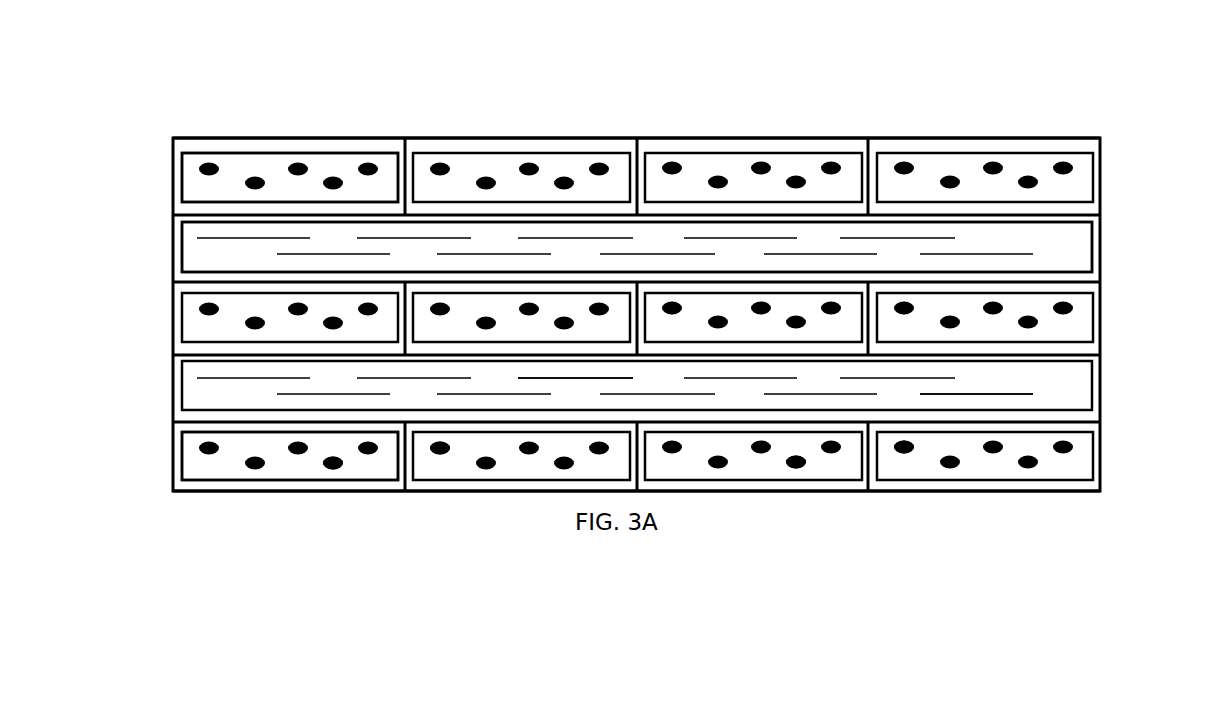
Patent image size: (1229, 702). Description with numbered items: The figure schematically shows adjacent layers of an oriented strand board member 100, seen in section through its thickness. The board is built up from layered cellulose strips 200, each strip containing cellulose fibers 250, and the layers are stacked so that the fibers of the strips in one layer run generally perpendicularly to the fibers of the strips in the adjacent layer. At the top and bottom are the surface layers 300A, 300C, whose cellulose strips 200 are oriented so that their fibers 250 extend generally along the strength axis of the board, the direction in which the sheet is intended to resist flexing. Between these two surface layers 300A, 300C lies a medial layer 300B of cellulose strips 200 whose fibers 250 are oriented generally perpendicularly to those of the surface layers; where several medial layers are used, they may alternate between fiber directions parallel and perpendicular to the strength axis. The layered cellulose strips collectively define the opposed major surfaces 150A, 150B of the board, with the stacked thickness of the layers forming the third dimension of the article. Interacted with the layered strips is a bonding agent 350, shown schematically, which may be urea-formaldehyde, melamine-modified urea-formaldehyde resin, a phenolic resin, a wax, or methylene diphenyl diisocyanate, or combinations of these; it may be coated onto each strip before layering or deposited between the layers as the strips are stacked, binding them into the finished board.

The board member 100 is at (464, 102).
The opposed major surface 150A is at (790, 128).
The opposed major surface 150B is at (536, 505).
The cellulose strips 200 is at (988, 396).
The fibers 250 is at (577, 380).
The surface layer 300A is at (1112, 152).
The medial layer 300B is at (1112, 219).
The surface layer 300C is at (1112, 428).
The bonding agent 350 is at (178, 243).